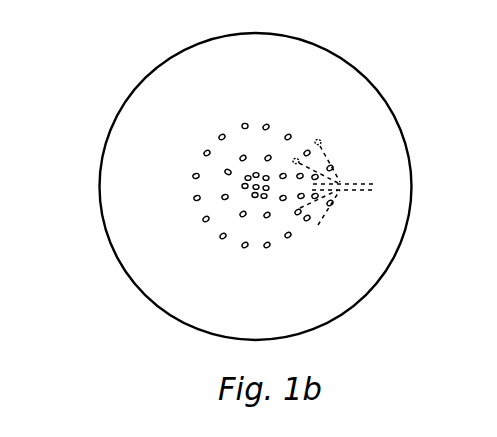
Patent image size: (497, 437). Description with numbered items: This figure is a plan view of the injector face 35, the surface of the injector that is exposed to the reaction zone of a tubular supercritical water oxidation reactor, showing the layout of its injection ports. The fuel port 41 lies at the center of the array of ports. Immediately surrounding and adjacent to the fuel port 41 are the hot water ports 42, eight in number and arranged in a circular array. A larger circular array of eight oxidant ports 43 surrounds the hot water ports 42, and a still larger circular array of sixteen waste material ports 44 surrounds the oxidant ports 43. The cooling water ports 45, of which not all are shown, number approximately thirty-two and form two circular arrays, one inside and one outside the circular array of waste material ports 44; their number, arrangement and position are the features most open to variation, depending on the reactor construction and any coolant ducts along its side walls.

The injector face 35 is at (274, 288).
The fuel port 41 is at (253, 196).
The hot water ports 42 is at (242, 186).
The oxidant ports 43 is at (226, 170).
The waste material ports 44 is at (244, 123).
The cooling water ports 45 is at (297, 159).